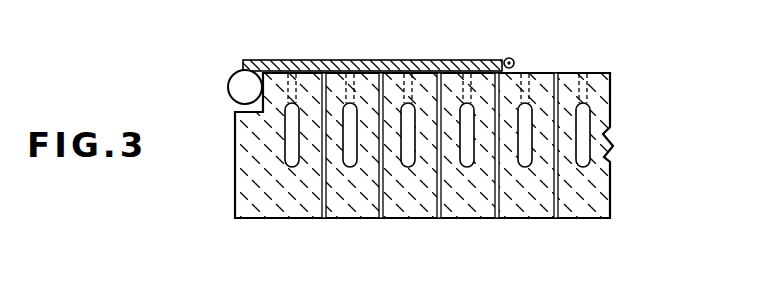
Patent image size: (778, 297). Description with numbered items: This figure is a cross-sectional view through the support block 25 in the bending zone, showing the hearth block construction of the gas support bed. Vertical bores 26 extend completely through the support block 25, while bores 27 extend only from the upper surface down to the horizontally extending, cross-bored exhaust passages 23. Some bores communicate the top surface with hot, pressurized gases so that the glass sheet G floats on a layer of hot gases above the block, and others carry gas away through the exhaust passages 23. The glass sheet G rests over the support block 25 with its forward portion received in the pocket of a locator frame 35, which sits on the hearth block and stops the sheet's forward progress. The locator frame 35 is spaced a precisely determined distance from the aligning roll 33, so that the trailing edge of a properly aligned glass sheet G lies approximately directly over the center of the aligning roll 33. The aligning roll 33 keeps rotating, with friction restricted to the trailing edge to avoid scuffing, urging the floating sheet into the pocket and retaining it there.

The exhaust passages 23 is at (520, 132).
The support block 25 is at (610, 97).
The vertical bores 26 is at (557, 219).
The bores 27 is at (582, 73).
The aligning roll 33 is at (229, 84).
The locator frame 35 is at (509, 58).
The glass sheet G is at (358, 60).